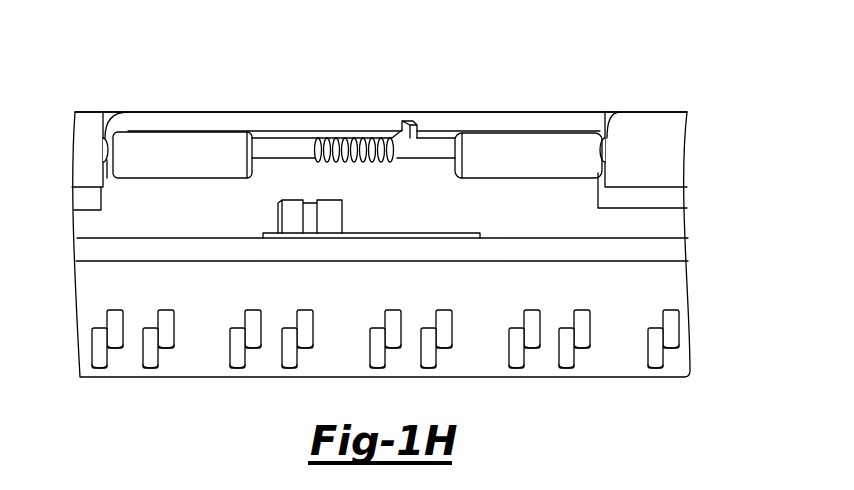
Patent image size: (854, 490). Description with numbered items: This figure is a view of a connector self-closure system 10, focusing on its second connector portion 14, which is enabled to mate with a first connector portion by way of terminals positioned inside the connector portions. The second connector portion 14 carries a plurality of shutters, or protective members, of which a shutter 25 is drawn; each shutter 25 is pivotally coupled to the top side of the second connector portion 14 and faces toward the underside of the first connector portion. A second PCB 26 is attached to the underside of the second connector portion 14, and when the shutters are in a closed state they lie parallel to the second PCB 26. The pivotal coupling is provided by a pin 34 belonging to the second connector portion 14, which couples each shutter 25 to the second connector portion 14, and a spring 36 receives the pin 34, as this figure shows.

The connector self-closure system 10 is at (400, 194).
The second connector portion 14 is at (367, 129).
The shutter 25 is at (512, 123).
The second PCB 26 is at (672, 290).
The pin 34 is at (362, 133).
The spring 36 is at (281, 147).